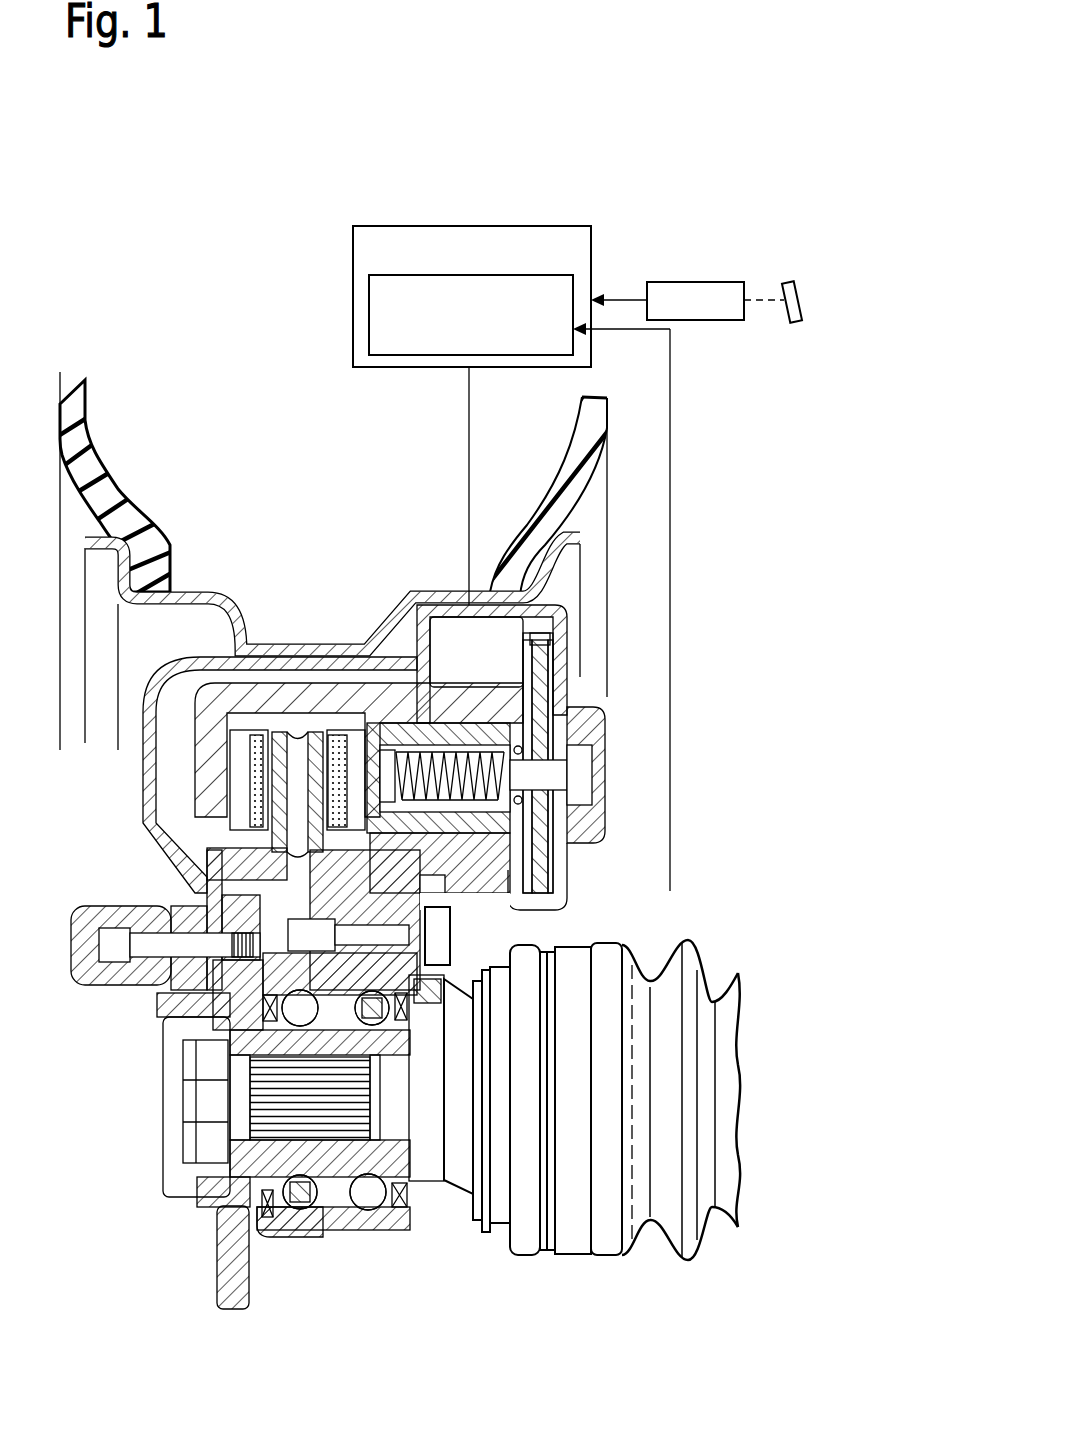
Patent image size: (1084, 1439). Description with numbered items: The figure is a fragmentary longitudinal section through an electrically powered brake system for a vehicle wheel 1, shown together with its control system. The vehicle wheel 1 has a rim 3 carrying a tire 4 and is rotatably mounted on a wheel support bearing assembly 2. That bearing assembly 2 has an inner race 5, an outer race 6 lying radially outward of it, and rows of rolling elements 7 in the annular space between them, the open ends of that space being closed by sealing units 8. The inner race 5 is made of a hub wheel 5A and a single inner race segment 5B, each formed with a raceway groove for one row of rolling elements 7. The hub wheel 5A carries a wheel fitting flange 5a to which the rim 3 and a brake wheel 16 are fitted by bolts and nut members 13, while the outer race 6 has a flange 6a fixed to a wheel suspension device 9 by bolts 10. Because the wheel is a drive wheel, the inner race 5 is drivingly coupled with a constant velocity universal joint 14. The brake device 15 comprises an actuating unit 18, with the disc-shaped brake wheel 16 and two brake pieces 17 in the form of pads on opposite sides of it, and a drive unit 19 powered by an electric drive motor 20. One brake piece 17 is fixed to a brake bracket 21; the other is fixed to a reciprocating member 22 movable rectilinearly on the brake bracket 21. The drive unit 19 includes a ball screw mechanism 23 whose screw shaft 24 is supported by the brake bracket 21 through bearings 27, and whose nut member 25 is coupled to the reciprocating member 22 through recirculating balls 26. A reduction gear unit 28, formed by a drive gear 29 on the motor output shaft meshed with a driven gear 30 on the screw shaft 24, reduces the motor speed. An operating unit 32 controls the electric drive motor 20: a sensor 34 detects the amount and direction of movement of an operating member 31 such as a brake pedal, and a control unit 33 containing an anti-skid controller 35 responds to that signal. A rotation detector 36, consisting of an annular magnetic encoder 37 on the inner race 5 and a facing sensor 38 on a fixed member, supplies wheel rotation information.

The vehicle wheel 1 is at (58, 395).
The wheel support bearing assembly 2 is at (141, 1141).
The rim 3 is at (143, 795).
The tire 4 is at (80, 468).
The inner race 5 is at (335, 1180).
The hub wheel 5A is at (327, 1237).
The inner race segment 5B is at (364, 1242).
The wheel fitting flange 5a is at (217, 1266).
The outer race 6 is at (373, 1247).
The flange 6a is at (163, 905).
The rolling elements 7 is at (300, 1225).
The sealing units 8 is at (260, 1196).
The wheel suspension device 9 is at (450, 997).
The bolts 10 is at (310, 935).
The bolts and nut members 13 is at (131, 956).
The constant velocity universal joint 14 is at (622, 1266).
The brake device 15 is at (273, 662).
The brake wheel 16 is at (215, 853).
The brake pieces 17 is at (340, 747).
The actuating unit 18 is at (252, 740).
The drive unit 19 is at (388, 735).
The electric drive motor 20 is at (478, 650).
The brake bracket 21 is at (300, 698).
The reciprocating member 22 is at (402, 650).
The ball screw mechanism 23 is at (733, 820).
The screw shaft 24 is at (575, 833).
The nut member 25 is at (570, 855).
The recirculating balls 26 is at (450, 977).
The bearings 27 is at (590, 745).
The reduction gear unit 28 is at (735, 605).
The drive gear 29 is at (553, 637).
The driven gear 30 is at (555, 692).
The operating member 31 is at (786, 290).
The operating unit 32 is at (673, 206).
The control unit 33 is at (517, 233).
The sensor 34 is at (688, 283).
The anti-skid controller 35 is at (369, 325).
The rotation detector 36 is at (645, 1100).
The magnetic encoder 37 is at (440, 1000).
The sensor 38 is at (433, 995).